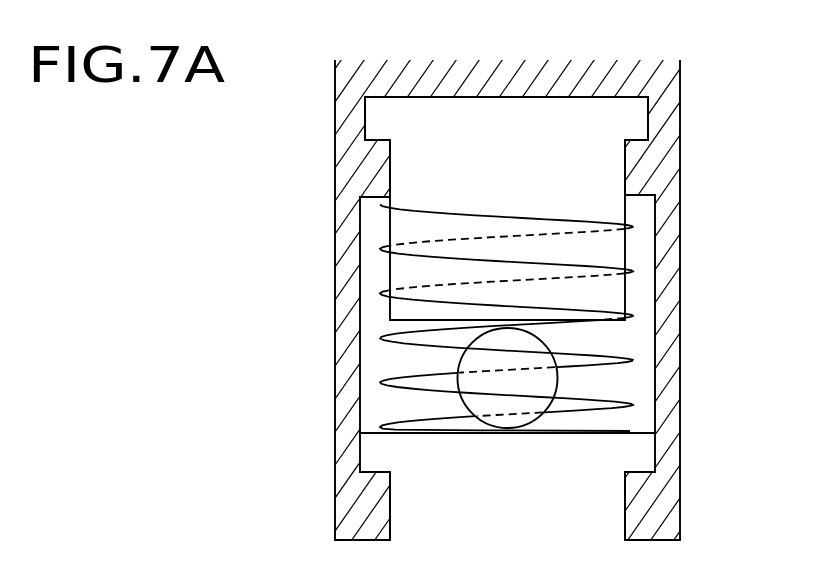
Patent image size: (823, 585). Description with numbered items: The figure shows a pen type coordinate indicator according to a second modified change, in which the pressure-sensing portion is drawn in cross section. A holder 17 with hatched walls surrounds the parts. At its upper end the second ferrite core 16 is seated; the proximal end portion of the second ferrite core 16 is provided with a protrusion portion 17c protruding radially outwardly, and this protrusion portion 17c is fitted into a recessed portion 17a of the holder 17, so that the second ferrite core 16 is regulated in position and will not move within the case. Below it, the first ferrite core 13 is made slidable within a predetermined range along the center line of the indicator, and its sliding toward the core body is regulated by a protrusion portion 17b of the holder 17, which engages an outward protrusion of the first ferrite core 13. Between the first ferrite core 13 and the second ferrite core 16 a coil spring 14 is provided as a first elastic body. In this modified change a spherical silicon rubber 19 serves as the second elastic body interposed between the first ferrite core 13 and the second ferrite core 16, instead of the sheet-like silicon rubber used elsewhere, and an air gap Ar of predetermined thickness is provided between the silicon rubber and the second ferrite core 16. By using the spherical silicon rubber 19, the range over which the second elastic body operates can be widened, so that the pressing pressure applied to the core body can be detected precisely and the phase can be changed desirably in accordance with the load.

The first ferrite core 13 is at (525, 455).
The coil spring 14 is at (628, 262).
The second ferrite core 16 is at (473, 117).
The holder 17 is at (650, 75).
The recessed portion 17a is at (365, 115).
The protrusion portion 17b is at (368, 510).
The protrusion portion 17c is at (380, 165).
The spherical silicon rubber 19 is at (547, 380).
The air gap Ar is at (423, 357).